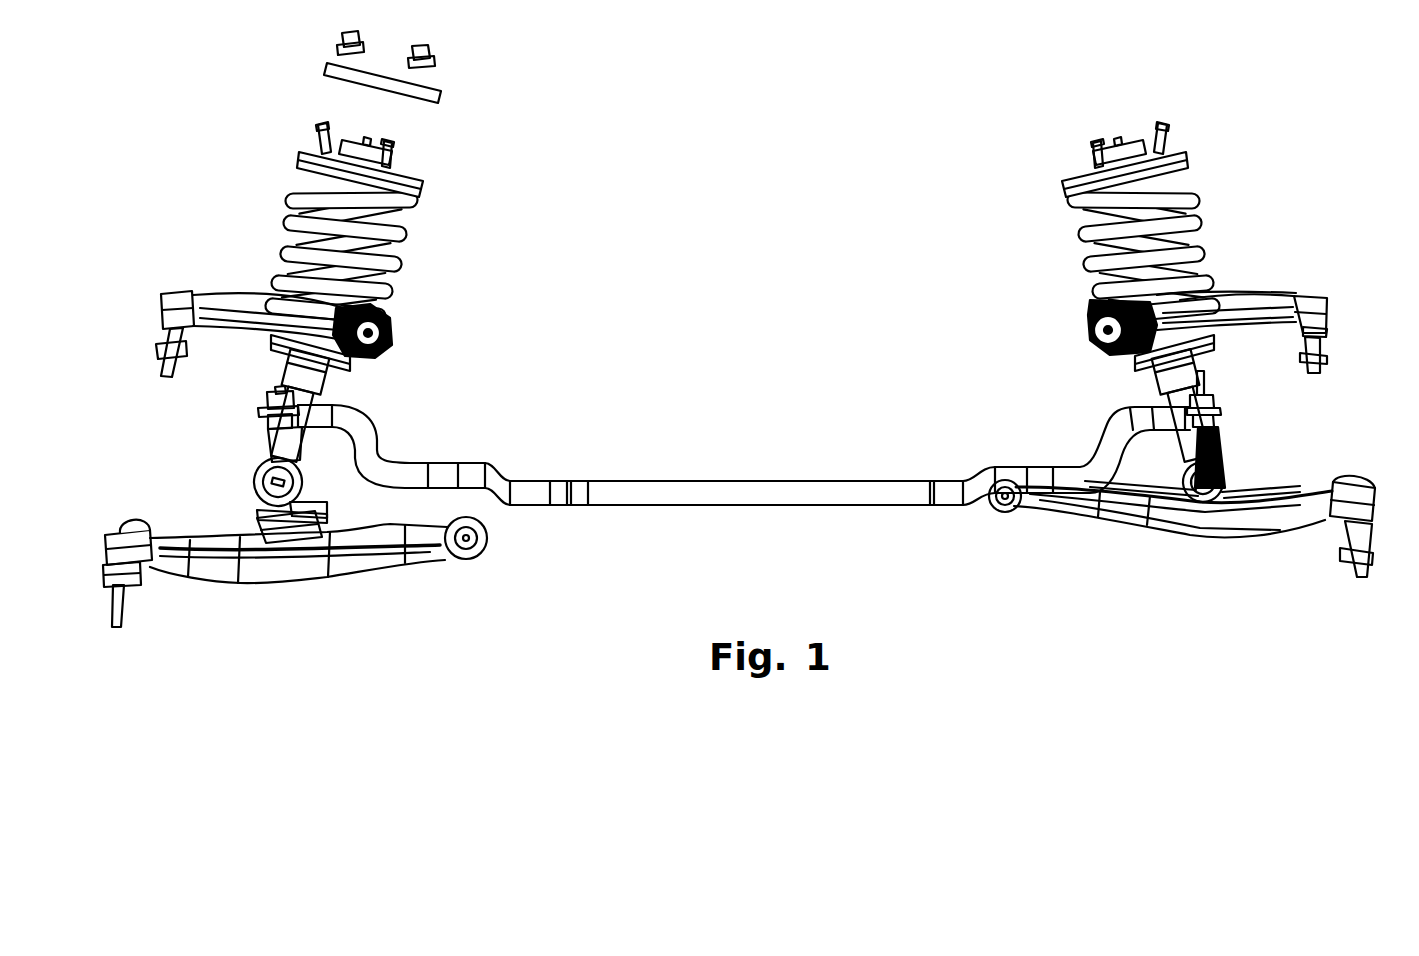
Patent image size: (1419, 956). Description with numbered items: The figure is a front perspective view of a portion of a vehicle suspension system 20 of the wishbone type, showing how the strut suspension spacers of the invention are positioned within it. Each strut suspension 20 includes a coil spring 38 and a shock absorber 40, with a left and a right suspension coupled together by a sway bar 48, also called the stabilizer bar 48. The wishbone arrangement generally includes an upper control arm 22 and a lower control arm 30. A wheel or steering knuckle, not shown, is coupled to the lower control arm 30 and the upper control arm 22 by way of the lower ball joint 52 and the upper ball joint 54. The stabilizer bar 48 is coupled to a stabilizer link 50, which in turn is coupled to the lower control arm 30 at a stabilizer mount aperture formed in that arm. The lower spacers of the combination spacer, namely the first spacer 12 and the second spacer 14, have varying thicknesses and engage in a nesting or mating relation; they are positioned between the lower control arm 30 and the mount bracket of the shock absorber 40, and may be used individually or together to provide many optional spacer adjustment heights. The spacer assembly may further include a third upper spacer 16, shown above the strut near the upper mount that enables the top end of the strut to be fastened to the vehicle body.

The first spacer 12 is at (263, 585).
The second spacer 14 is at (325, 510).
The third upper spacer 16 is at (440, 83).
The vehicle suspension system 20 is at (452, 315).
The upper control arm 22 is at (1268, 297).
The lower control arm 30 is at (1100, 525).
The coil spring 38 is at (291, 223).
The shock absorber 40 is at (300, 375).
The sway bar 48 is at (760, 508).
The stabilizer link 50 is at (1215, 465).
The lower ball joint 52 is at (113, 587).
The upper ball joint 54 is at (165, 334).